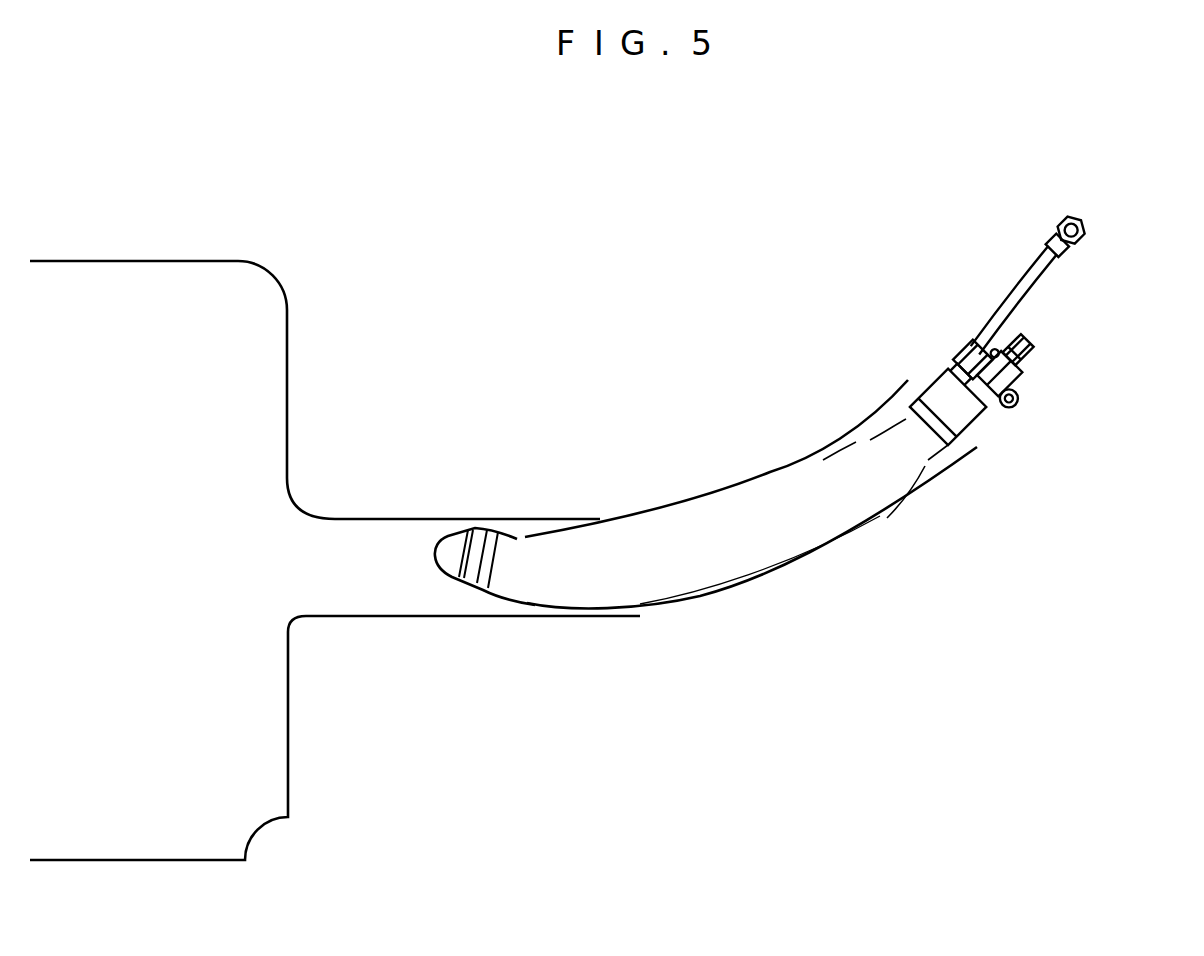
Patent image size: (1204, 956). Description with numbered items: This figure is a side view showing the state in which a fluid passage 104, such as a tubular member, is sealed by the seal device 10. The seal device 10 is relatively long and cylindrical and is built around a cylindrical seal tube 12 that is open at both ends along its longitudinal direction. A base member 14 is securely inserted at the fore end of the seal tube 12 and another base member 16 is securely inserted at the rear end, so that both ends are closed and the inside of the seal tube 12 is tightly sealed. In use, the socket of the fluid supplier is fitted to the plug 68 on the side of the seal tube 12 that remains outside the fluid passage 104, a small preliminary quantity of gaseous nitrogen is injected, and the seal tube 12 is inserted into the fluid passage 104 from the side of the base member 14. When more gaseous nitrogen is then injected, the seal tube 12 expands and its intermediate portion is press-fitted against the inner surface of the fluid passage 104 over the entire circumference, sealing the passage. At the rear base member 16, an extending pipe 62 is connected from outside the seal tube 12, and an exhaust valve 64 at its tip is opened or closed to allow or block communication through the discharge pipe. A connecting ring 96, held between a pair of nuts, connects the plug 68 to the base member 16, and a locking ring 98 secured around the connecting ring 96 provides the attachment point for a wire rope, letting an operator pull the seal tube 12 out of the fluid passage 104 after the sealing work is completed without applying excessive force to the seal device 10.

The seal device 10 is at (807, 453).
The seal tube 12 is at (538, 533).
The base member 14 is at (455, 577).
The base member 16 is at (951, 403).
The extending pipe 62 is at (1013, 300).
The exhaust valve 64 is at (1066, 235).
The plug 68 is at (1018, 349).
The connecting ring 96 is at (987, 365).
The locking ring 98 is at (1008, 398).
The fluid passage 104 is at (376, 520).